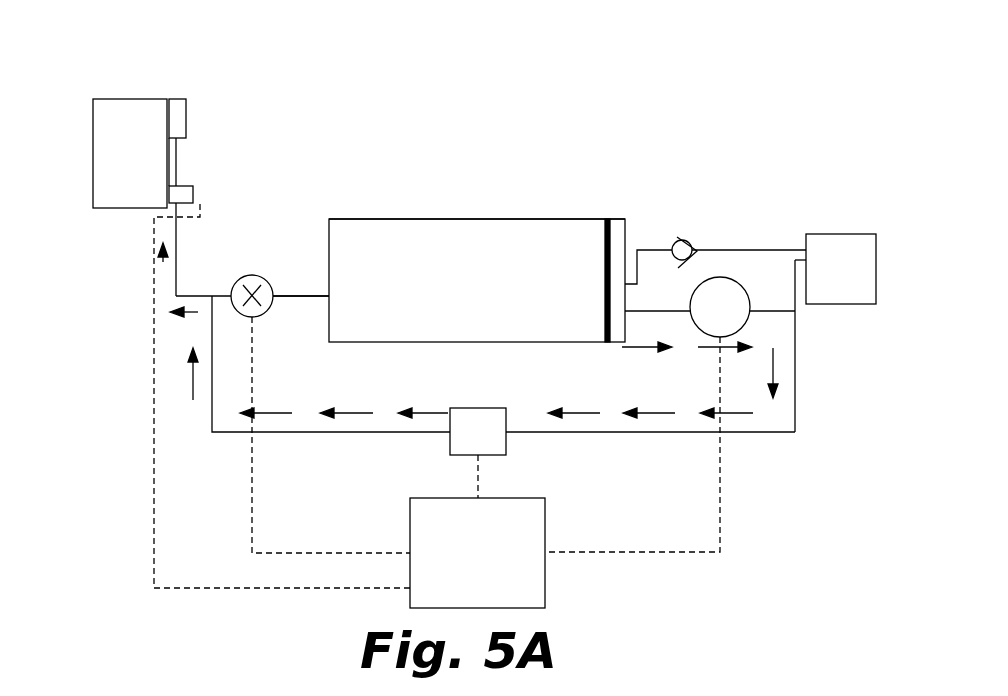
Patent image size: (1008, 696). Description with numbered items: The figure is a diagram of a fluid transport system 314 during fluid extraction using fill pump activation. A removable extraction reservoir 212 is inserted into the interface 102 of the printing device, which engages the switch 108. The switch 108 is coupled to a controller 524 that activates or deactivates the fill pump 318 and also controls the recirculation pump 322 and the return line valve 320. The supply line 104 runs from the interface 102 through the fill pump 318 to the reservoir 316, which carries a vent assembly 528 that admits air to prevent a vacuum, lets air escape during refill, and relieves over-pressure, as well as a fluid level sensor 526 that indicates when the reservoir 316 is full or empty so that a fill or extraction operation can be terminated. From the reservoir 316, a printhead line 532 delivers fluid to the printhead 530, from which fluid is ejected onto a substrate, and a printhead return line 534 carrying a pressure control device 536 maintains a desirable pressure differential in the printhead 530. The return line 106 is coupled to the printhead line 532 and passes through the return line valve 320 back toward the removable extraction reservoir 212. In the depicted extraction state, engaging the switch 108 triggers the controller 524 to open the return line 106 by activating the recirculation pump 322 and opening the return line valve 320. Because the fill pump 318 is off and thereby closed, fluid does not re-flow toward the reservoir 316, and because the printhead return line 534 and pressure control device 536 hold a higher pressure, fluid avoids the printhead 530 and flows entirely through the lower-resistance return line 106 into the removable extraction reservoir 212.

The fluid transport system 314 is at (304, 72).
The removable extraction reservoir 212 is at (128, 108).
The interface 102 is at (177, 122).
The switch 108 is at (183, 203).
The fill pump 318 is at (254, 275).
The supply line 104 is at (302, 298).
The vent assembly 528 is at (352, 222).
The reservoir 316 is at (512, 235).
The fluid level sensor 526 is at (613, 230).
The pressure control device 536 is at (678, 238).
The printhead return line 534 is at (763, 250).
The printhead 530 is at (833, 245).
The printhead line 532 is at (797, 283).
The recirculation pump 322 is at (700, 330).
The return line valve 320 is at (493, 448).
The return line 106 is at (777, 432).
The controller 524 is at (477, 553).